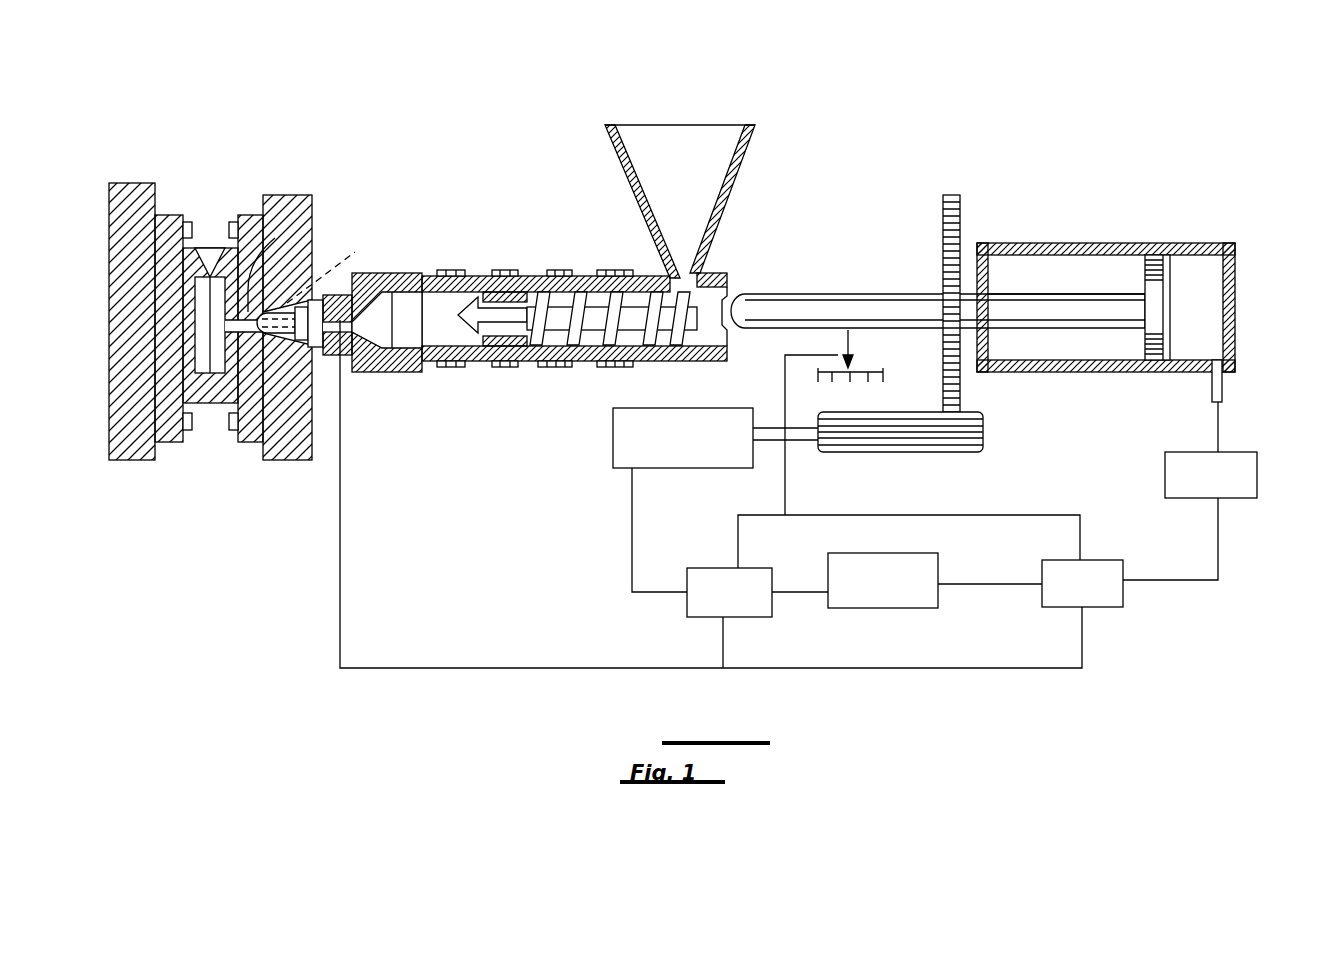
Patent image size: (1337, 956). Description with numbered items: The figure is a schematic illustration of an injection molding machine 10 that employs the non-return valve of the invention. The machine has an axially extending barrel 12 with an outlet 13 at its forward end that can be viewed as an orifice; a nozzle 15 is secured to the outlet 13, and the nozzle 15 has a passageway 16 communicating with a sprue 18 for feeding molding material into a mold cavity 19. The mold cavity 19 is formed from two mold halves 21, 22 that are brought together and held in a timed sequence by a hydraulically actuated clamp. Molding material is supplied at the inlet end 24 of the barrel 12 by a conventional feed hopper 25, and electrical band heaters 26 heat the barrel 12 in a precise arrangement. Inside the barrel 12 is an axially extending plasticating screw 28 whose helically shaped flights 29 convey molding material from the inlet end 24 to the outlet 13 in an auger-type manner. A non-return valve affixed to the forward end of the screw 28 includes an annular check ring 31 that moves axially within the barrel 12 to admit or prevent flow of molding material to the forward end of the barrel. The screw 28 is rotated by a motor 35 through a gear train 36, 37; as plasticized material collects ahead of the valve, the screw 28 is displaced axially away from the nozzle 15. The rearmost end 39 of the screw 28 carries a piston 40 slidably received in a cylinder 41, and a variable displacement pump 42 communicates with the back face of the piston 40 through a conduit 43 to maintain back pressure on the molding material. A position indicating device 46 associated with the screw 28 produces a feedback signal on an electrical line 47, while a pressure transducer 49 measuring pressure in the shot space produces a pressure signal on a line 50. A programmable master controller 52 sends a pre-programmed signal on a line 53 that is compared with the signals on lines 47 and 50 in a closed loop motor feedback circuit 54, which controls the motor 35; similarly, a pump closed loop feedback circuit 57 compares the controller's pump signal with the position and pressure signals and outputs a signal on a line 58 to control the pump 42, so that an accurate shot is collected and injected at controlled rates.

The injection molding machine 10 is at (848, 172).
The barrel 12 is at (533, 274).
The outlet 13 is at (375, 367).
The nozzle 15 is at (315, 350).
The passageway 16 is at (339, 290).
The sprue 18 is at (265, 248).
The mold cavity 19 is at (215, 367).
The mold half 21 is at (246, 215).
The mold half 22 is at (172, 215).
The inlet end 24 is at (683, 288).
The feed hopper 25 is at (733, 148).
The electrical band heaters 26 is at (597, 367).
The plasticating screw 28 is at (693, 327).
The flights 29 is at (647, 362).
The check ring 31 is at (498, 362).
The motor 35 is at (685, 468).
The gear train 36 is at (912, 452).
The gear train 37 is at (953, 195).
The rearmost end 39 is at (1073, 328).
The piston 40 is at (1157, 243).
The cylinder 41 is at (1057, 243).
The variable displacement pump 42 is at (1257, 465).
The conduit 43 is at (1222, 385).
The position indicating device 46 is at (855, 345).
The electrical line 47 is at (785, 473).
The pressure transducer 49 is at (345, 318).
The line 50 is at (340, 605).
The programmable master controller 52 is at (922, 612).
The line 53 is at (790, 592).
The closed loop motor feedback circuit 54 is at (687, 607).
The pump closed loop feedback circuit 57 is at (1120, 607).
The line 58 is at (1180, 580).